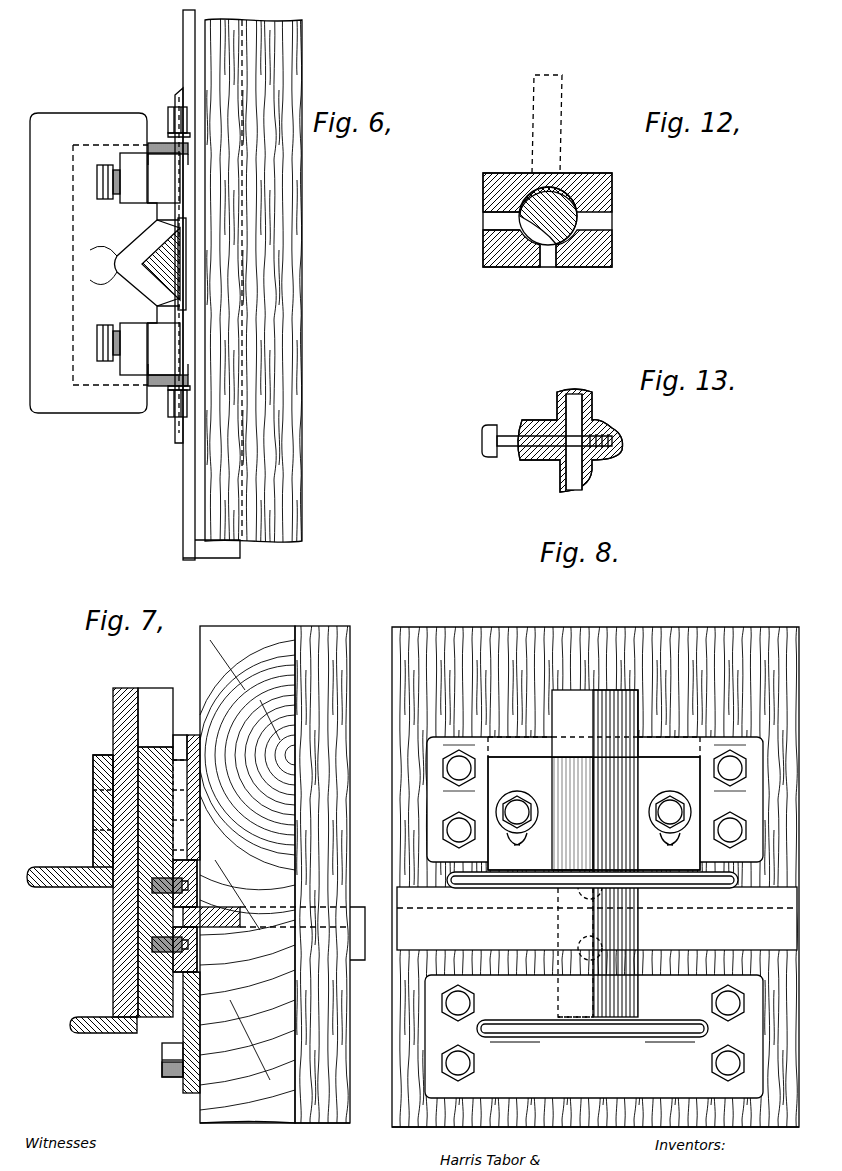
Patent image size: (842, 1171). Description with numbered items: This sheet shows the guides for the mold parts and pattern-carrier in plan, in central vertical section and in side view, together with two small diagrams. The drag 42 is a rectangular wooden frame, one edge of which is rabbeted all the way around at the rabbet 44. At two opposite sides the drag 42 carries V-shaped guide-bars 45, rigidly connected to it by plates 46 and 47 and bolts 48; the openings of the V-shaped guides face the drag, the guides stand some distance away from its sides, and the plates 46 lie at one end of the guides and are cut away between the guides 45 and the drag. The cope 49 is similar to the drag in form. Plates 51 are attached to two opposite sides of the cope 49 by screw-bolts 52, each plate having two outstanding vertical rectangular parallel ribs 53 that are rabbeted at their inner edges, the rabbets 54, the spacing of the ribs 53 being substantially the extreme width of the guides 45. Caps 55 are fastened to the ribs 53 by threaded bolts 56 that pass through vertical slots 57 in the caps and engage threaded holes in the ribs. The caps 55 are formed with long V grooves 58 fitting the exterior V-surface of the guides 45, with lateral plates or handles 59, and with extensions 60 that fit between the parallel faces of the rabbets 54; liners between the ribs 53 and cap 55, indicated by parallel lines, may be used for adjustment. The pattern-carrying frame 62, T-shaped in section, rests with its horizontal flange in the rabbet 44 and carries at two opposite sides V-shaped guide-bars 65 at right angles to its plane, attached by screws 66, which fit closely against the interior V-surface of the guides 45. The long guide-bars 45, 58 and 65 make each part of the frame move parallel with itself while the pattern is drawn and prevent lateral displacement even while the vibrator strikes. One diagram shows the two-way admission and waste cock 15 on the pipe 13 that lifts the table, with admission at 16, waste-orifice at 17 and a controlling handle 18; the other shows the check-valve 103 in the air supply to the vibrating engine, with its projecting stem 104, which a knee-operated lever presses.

In FIG. 12, the pipe 13 is at (548, 262).
In FIG. 12, the admission and waste cock 15 is at (562, 200).
In FIG. 12, the admission 16 is at (605, 219).
In FIG. 12, the waste-orifice 17 is at (490, 219).
In FIG. 12, the handle 18 is at (557, 127).
In FIG. 7, the drag 42 is at (245, 1120).
In FIG. 8, the drag 42 is at (625, 1105).
In FIG. 7, the rabbet 44 is at (245, 912).
In FIG. 6, the V-shaped guide-bars 45 is at (186, 222).
In FIG. 7, the V-shaped guide-bars 45 is at (113, 707).
In FIG. 8, the V-shaped guide-bars 45 is at (592, 695).
In FIG. 6, the plates 46 is at (145, 138).
In FIG. 7, the plates 46 is at (70, 1025).
In FIG. 8, the plates 46 is at (498, 1023).
In FIG. 7, the plates 47 is at (183, 1088).
In FIG. 8, the plates 47 is at (594, 1036).
In FIG. 7, the bolts 48 is at (165, 1055).
In FIG. 8, the bolts 48 is at (455, 1008).
In FIG. 6, the cope 49 is at (283, 232).
In FIG. 7, the cope 49 is at (235, 632).
In FIG. 8, the cope 49 is at (555, 640).
In FIG. 6, the plates 51 is at (197, 95).
In FIG. 7, the plates 51 is at (200, 740).
In FIG. 8, the plates 51 is at (458, 828).
In FIG. 6, the screw-bolts 52 is at (178, 100).
In FIG. 7, the screw-bolts 52 is at (205, 768).
In FIG. 8, the screw-bolts 52 is at (457, 772).
In FIG. 6, the ribs 53 is at (160, 157).
In FIG. 7, the ribs 53 is at (182, 735).
In FIG. 8, the ribs 53 is at (595, 799).
In FIG. 6, the rabbets 54 is at (157, 207).
In FIG. 8, the rabbets 54 is at (538, 746).
In FIG. 6, the caps 55 is at (130, 165).
In FIG. 7, the caps 55 is at (93, 770).
In FIG. 8, the caps 55 is at (594, 813).
In FIG. 6, the threaded bolts 56 is at (105, 183).
In FIG. 7, the threaded bolts 56 is at (93, 803).
In FIG. 8, the threaded bolts 56 is at (514, 800).
In FIG. 8, the vertical slots 57 is at (510, 842).
In FIG. 6, the V grooves 58 is at (115, 262).
In FIG. 8, the V grooves 58 is at (595, 723).
In FIG. 6, the lateral plates or handles 59 is at (73, 405).
In FIG. 7, the lateral plates or handles 59 is at (45, 867).
In FIG. 8, the lateral plates or handles 59 is at (695, 880).
In FIG. 6, the extensions 60 is at (160, 210).
In FIG. 6, the frame 62 is at (230, 550).
In FIG. 7, the frame 62 is at (357, 933).
In FIG. 8, the frame 62 is at (405, 892).
In FIG. 6, the V-shaped guide-bars 65 is at (167, 265).
In FIG. 7, the V-shaped guide-bars 65 is at (150, 745).
In FIG. 8, the V-shaped guide-bars 65 is at (578, 1028).
In FIG. 7, the screws 66 is at (150, 937).
In FIG. 8, the screws 66 is at (580, 946).
In FIG. 13, the check-valve 103 is at (522, 458).
In FIG. 13, the projecting stem 104 is at (500, 436).